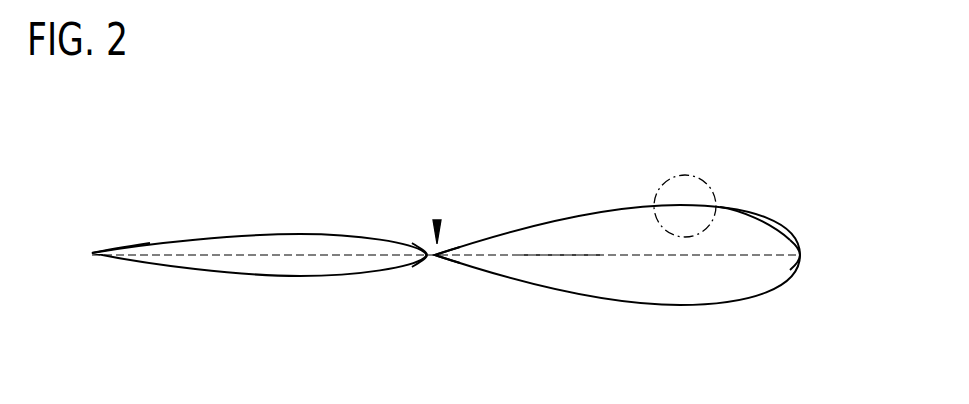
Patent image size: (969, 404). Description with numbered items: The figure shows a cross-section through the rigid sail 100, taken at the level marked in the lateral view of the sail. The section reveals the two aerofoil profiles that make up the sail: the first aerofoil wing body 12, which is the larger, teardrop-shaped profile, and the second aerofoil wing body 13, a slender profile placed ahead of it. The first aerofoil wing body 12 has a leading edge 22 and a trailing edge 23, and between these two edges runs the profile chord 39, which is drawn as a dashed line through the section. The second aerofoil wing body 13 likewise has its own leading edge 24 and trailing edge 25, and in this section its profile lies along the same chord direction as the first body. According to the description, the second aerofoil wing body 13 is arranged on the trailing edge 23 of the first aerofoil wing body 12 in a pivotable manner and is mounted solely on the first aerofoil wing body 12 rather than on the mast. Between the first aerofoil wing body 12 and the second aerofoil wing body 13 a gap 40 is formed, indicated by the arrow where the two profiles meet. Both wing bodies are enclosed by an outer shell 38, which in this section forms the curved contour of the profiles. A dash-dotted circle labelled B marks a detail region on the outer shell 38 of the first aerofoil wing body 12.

The rigid sail 100 is at (815, 84).
The first aerofoil wing body 12 is at (664, 305).
The second aerofoil wing body 13 is at (300, 277).
The leading edge 22 is at (803, 255).
The trailing edge 23 is at (433, 262).
The leading edge 24 is at (425, 250).
The trailing edge 25 is at (92, 254).
The outer shell 38 is at (758, 218).
The profile chord 39 is at (565, 254).
The gap 40 is at (438, 220).
The detail region B is at (685, 189).